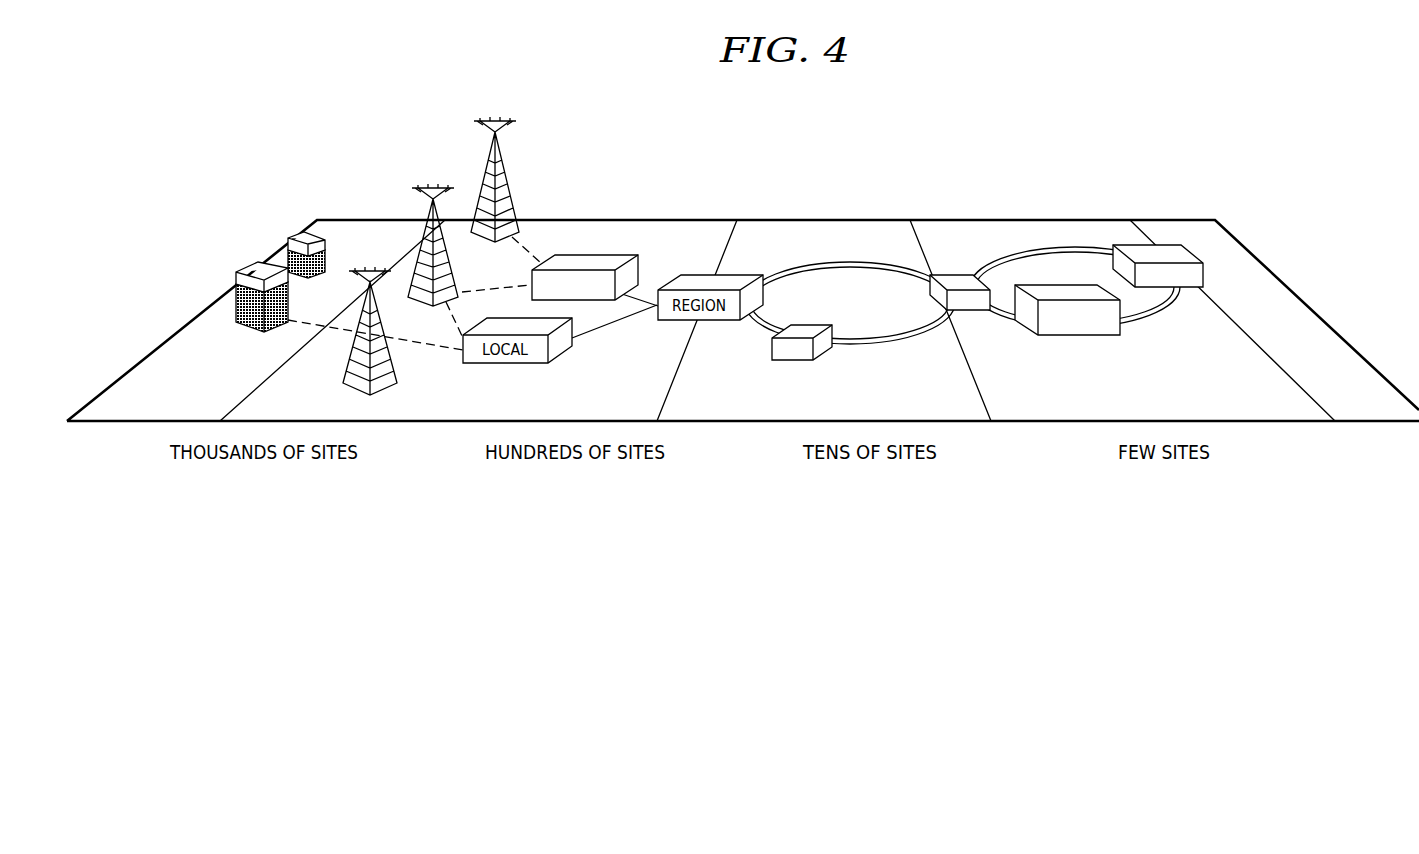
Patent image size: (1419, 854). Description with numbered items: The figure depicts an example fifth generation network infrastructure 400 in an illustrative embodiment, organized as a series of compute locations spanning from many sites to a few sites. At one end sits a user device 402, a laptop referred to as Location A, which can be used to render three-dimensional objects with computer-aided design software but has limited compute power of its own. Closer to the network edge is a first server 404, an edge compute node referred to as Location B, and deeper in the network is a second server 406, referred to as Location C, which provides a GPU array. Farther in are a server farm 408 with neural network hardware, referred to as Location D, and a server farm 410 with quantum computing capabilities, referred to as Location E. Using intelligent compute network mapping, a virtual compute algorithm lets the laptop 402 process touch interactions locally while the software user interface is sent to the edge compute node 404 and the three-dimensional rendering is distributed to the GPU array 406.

The 5G network infrastructure 400 is at (795, 219).
The user device 402 is at (307, 232).
The first server 404 is at (497, 118).
The second server 406 is at (590, 262).
The server farm with neural network hardware 408 is at (1082, 336).
The server farm with quantum computing capabilities 410 is at (1172, 250).